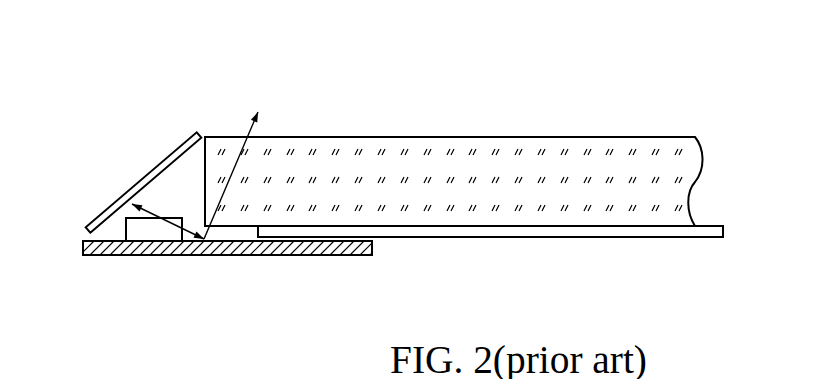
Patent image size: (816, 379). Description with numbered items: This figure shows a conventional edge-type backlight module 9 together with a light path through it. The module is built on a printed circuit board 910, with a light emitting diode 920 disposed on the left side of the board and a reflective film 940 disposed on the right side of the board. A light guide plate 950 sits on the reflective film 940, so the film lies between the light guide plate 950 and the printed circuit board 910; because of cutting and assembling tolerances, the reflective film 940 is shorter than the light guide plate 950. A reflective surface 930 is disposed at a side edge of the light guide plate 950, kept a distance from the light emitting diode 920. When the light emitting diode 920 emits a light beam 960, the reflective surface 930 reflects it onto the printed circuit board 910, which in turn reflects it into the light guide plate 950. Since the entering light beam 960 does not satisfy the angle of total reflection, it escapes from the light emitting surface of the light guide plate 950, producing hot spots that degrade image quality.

The edge-type backlight module 9 is at (140, 82).
The printed circuit board 910 is at (320, 256).
The light emitting diode 920 is at (157, 232).
The reflective surface 930 is at (107, 209).
The reflective film 940 is at (562, 238).
The light guide plate 950 is at (678, 182).
The light beam 960 is at (151, 218).